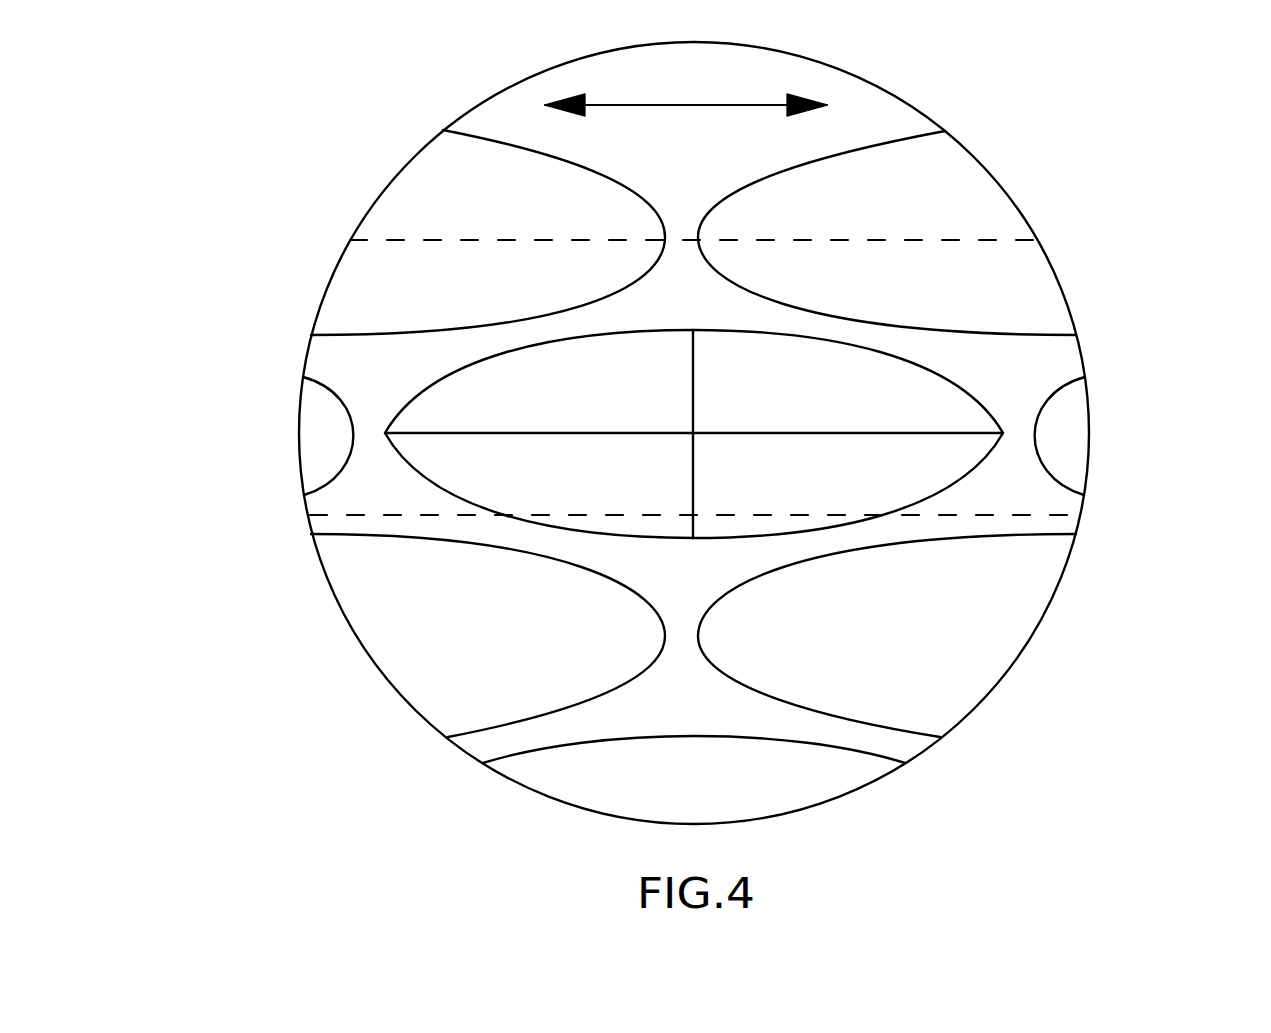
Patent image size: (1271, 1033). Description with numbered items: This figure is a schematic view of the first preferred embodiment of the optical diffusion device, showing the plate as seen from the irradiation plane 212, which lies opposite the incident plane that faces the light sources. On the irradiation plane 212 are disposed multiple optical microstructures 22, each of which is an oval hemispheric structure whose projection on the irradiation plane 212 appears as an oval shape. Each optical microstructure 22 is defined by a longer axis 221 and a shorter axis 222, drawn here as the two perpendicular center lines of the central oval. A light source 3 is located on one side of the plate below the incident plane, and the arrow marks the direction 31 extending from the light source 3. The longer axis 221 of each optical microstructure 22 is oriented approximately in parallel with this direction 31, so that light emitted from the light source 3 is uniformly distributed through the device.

The light source 3 is at (355, 358).
The direction extending from the light source 31 is at (686, 86).
The optical microstructure 22 is at (455, 485).
The longer axis 221 is at (920, 432).
The shorter axis 222 is at (693, 478).
The irradiation plane 212 is at (523, 735).